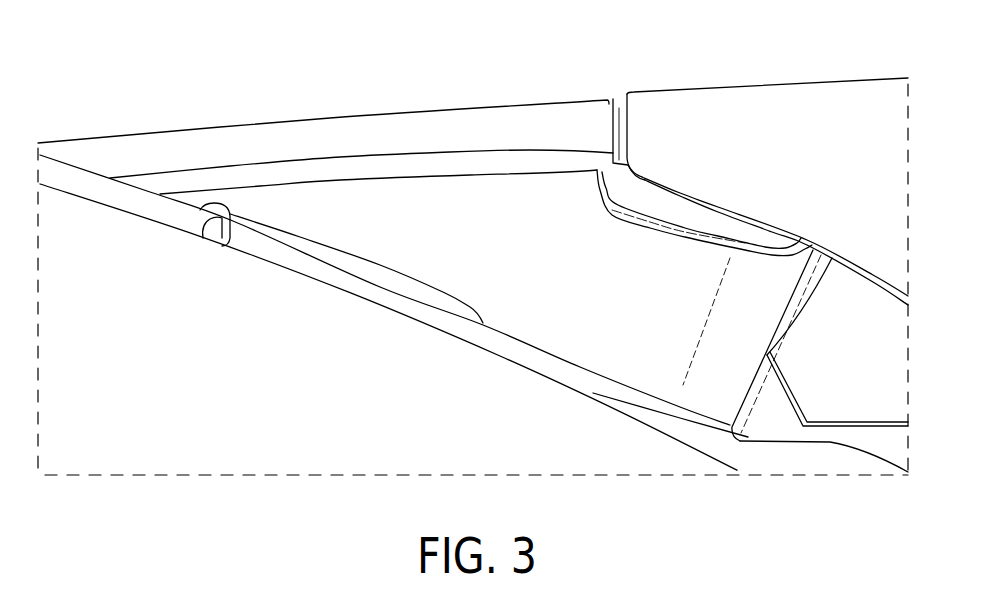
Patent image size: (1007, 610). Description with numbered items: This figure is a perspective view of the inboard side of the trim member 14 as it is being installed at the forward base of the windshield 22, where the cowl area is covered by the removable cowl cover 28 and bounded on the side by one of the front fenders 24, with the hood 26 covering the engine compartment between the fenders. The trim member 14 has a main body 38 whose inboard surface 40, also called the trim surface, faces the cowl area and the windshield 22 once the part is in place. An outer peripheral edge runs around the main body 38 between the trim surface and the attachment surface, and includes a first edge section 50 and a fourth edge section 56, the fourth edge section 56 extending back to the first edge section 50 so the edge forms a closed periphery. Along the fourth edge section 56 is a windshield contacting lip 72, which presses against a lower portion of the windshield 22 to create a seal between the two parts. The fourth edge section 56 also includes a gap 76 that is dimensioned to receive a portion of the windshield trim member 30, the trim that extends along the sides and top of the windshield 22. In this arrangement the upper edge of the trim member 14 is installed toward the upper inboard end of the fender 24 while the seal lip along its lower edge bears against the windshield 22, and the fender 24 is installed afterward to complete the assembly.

The trim member 14 is at (448, 211).
The windshield 22 is at (115, 262).
The front fender 24 is at (465, 125).
The hood 26 is at (775, 120).
The cowl cover 28 is at (865, 363).
The windshield trim member 30 is at (65, 178).
The main body 38 is at (277, 210).
The inboard surface 40 is at (550, 213).
The first edge section 50 is at (292, 172).
The fourth edge section 56 is at (363, 288).
The windshield contacting lip 72 is at (535, 357).
The gap 76 is at (203, 238).